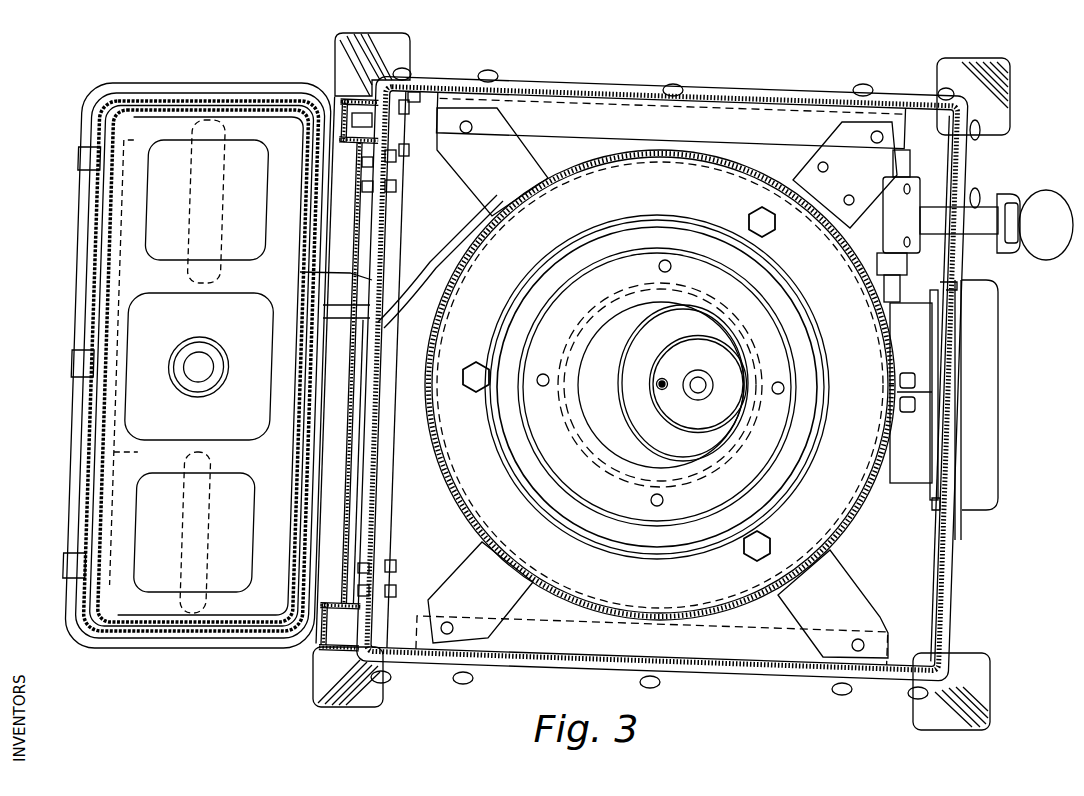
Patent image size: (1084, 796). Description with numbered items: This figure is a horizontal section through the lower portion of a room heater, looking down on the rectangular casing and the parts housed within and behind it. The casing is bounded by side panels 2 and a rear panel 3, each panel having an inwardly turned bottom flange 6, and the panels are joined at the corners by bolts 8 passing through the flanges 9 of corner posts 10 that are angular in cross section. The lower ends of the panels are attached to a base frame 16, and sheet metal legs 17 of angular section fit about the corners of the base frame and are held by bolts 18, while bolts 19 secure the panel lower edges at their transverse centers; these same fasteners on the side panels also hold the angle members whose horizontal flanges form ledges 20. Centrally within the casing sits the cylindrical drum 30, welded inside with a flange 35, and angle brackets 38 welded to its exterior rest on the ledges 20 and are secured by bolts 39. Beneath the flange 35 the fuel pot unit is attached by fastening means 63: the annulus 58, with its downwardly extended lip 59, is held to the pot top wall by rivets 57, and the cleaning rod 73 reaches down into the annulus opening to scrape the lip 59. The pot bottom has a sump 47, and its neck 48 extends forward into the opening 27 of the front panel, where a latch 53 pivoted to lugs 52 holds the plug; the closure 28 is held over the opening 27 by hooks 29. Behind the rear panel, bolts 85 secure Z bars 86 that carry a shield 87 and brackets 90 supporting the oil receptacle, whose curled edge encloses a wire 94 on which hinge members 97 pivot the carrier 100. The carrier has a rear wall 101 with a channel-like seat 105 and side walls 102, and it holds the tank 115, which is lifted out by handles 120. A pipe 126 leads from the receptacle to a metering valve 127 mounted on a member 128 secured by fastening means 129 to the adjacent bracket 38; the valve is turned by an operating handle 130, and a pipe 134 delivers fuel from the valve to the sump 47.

The side panels 2 is at (745, 94).
The rear panel 3 is at (388, 238).
The bottom flange 6 is at (390, 462).
The bolts 8 is at (432, 100).
The flanges 9 is at (410, 108).
The corner posts 10 is at (388, 80).
The base frame 16 is at (370, 502).
The legs 17 is at (356, 40).
The bolts 18 is at (494, 74).
The bolts 19 is at (680, 86).
The ledges 20 is at (597, 112).
The opening 27 is at (942, 448).
The closure 28 is at (988, 383).
The hooks 29 is at (963, 305).
The drum 30 is at (446, 296).
The flange 35 is at (657, 366).
The angle brackets 38 is at (470, 162).
The bolts 39 is at (468, 134).
The sump 47 is at (670, 396).
The neck 48 is at (912, 476).
The lugs 52 is at (908, 373).
The latch 53 is at (922, 410).
The rivets 57 is at (659, 266).
The annulus 58 is at (758, 318).
The lip 59 is at (603, 318).
The fastening means 63 is at (762, 546).
The cleaning rod 73 is at (658, 383).
The bolts 85 is at (380, 168).
The Z bars 86 is at (362, 160).
The shield 87 is at (322, 290).
The brackets 90 is at (330, 97).
The wire 94 is at (137, 645).
The hinge members 97 is at (78, 160).
The carrier 100 is at (90, 256).
The rear wall 101 is at (92, 331).
The side walls 102 is at (222, 103).
The seat 105 is at (140, 455).
The tank 115 is at (100, 477).
The handles 120 is at (220, 232).
The pipe 126 is at (440, 258).
The valve 127 is at (985, 236).
The member 128 is at (894, 201).
The fastening means 129 is at (829, 168).
The operating handle 130 is at (1040, 192).
The pipe 134 is at (882, 292).